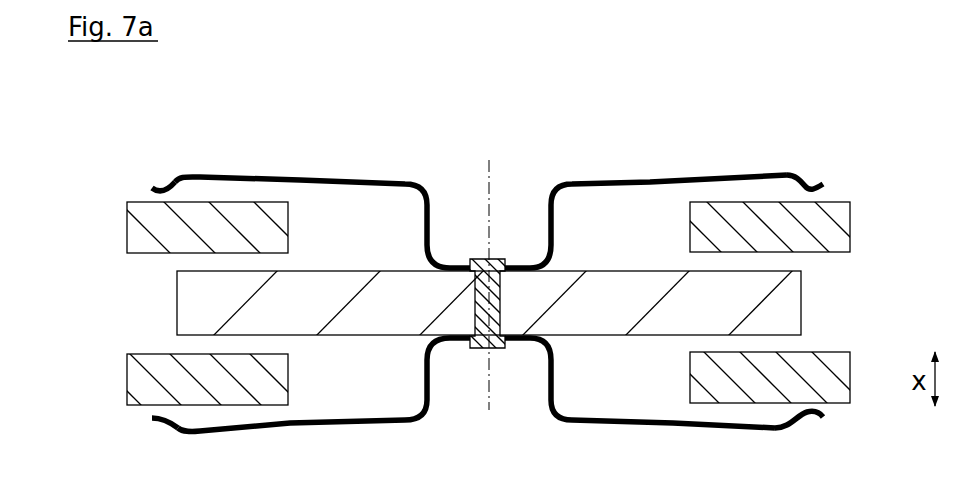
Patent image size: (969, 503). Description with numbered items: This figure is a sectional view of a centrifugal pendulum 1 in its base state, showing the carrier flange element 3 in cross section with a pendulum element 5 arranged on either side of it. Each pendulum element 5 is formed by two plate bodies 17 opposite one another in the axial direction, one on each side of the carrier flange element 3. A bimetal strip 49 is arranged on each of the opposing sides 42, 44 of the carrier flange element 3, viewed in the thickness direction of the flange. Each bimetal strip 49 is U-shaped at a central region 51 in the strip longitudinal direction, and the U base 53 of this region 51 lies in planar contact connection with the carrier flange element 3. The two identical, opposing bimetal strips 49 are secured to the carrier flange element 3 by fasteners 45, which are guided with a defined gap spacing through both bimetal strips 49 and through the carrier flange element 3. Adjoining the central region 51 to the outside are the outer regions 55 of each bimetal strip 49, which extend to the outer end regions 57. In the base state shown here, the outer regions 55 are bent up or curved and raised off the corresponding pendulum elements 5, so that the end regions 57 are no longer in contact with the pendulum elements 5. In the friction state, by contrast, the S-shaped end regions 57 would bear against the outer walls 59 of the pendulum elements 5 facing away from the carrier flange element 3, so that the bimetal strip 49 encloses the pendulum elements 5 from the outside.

The centrifugal pendulum 1 is at (880, 143).
The carrier flange element 3 is at (790, 294).
The pendulum element 5 is at (145, 227).
The plate body 17 is at (150, 243).
The side of the carrier flange element 42 is at (390, 244).
The side of the carrier flange element 44 is at (377, 353).
The fastener 45 is at (495, 303).
The bimetal strip 49 is at (672, 182).
The central region 51 is at (523, 118).
The U base 53 is at (503, 240).
The outer region 55 is at (362, 155).
The outer end region 57 is at (186, 157).
The outer wall 59 is at (243, 202).